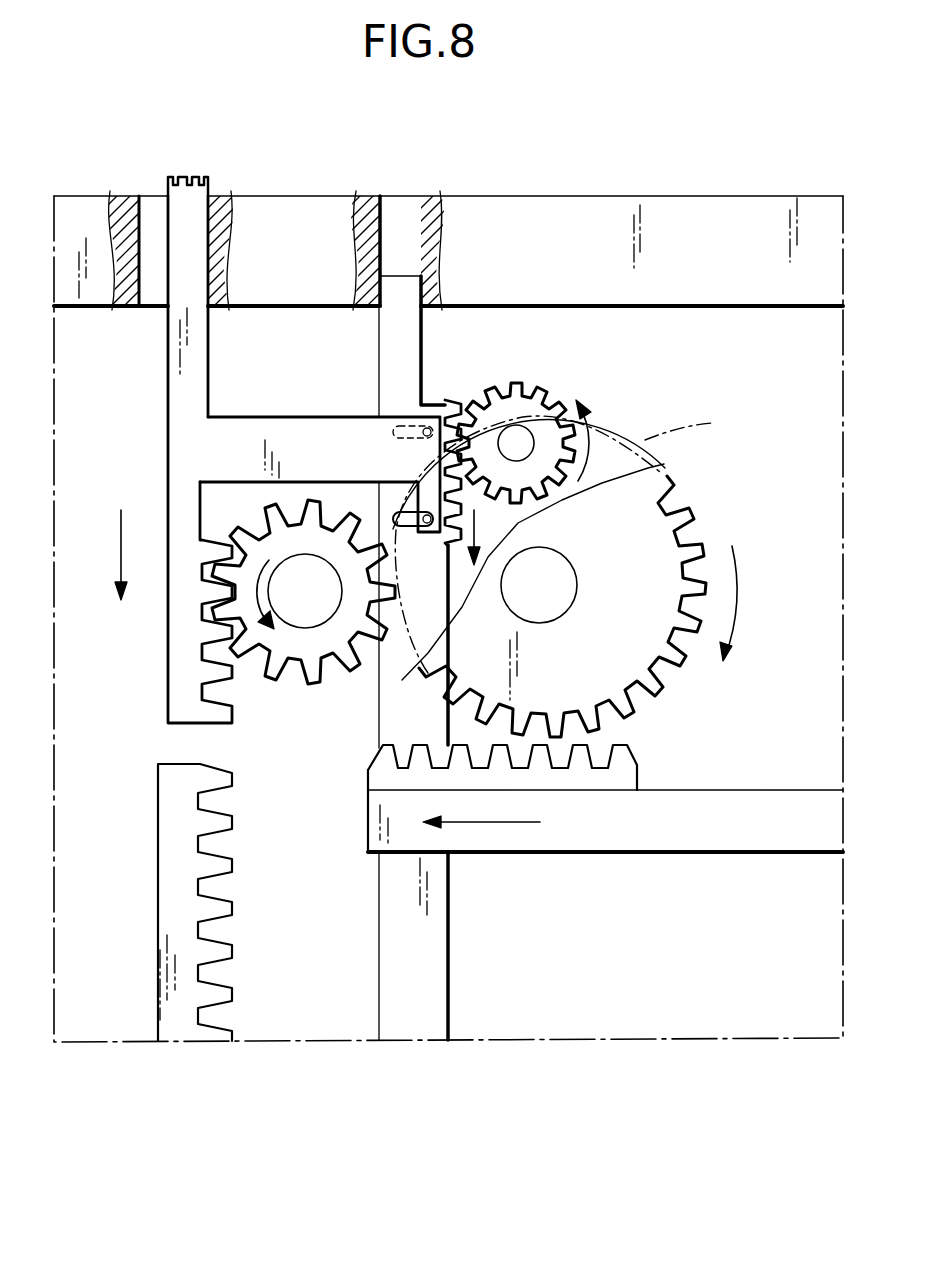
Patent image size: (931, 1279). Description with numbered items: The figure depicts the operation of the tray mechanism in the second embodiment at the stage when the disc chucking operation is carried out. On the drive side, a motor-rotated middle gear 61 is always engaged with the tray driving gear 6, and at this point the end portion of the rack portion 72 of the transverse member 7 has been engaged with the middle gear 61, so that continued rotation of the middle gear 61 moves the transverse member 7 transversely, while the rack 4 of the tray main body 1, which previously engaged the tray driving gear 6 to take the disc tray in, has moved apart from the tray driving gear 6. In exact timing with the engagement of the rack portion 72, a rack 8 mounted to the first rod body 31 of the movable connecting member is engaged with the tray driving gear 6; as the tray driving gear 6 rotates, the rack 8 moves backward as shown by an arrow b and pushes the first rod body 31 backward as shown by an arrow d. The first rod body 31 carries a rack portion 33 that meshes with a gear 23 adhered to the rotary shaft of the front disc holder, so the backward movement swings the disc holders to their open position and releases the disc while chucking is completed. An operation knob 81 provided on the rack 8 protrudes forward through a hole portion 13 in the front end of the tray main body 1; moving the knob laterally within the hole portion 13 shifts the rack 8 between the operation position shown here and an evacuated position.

The tray main body 1 is at (664, 1040).
The hole portion 13 is at (153, 205).
The operation knob 81 is at (197, 176).
The rack 8 is at (172, 668).
The tray driving gear 6 is at (305, 675).
The first rod body 31 is at (378, 714).
The rack portion 33 is at (450, 404).
The gear 23 is at (548, 397).
The middle gear 61 is at (665, 432).
The rack portion 72 is at (640, 756).
The transverse member 7 is at (596, 853).
The rack 4 is at (235, 872).